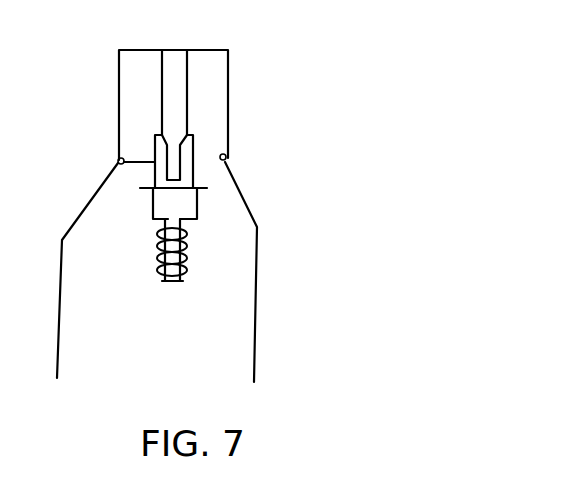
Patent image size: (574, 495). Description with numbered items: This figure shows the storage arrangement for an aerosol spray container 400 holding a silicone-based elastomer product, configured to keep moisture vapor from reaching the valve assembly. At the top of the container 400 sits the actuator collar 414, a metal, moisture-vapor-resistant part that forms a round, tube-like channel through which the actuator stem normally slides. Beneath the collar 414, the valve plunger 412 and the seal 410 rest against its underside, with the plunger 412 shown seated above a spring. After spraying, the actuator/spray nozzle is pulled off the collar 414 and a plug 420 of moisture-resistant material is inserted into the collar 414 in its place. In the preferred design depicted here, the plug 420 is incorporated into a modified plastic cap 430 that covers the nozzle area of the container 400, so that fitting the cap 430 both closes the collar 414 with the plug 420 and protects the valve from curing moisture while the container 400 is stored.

The container 400 is at (256, 357).
The modified plastic cap 430 is at (208, 50).
The plug 420 is at (183, 110).
The actuator collar 414 is at (186, 176).
The seal 410 is at (210, 190).
The valve plunger 412 is at (163, 270).